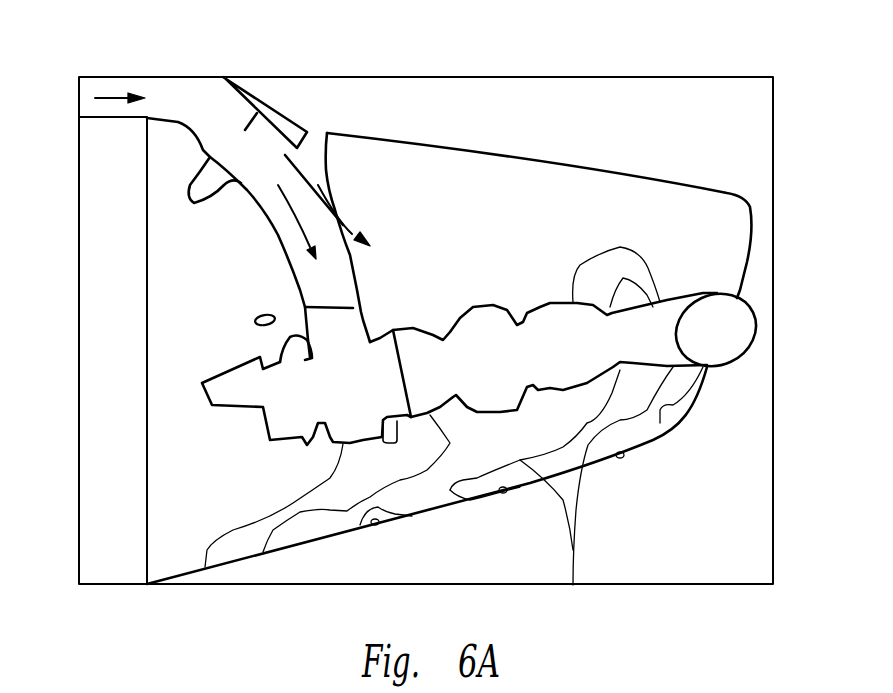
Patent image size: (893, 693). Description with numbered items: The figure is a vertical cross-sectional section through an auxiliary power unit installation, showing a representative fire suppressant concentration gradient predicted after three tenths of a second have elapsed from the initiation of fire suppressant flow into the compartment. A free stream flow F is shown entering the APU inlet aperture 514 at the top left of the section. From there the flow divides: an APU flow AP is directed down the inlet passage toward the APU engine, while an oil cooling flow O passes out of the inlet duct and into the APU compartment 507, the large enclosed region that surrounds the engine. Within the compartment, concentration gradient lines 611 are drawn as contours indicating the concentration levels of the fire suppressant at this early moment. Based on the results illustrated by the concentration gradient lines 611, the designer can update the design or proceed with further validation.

The APU compartment 507 is at (492, 190).
The APU inlet aperture 514 is at (233, 113).
The concentration gradient lines 611 is at (573, 585).
The free stream flow F is at (105, 96).
The APU flow AP is at (300, 213).
The oil cooling flow O is at (328, 206).